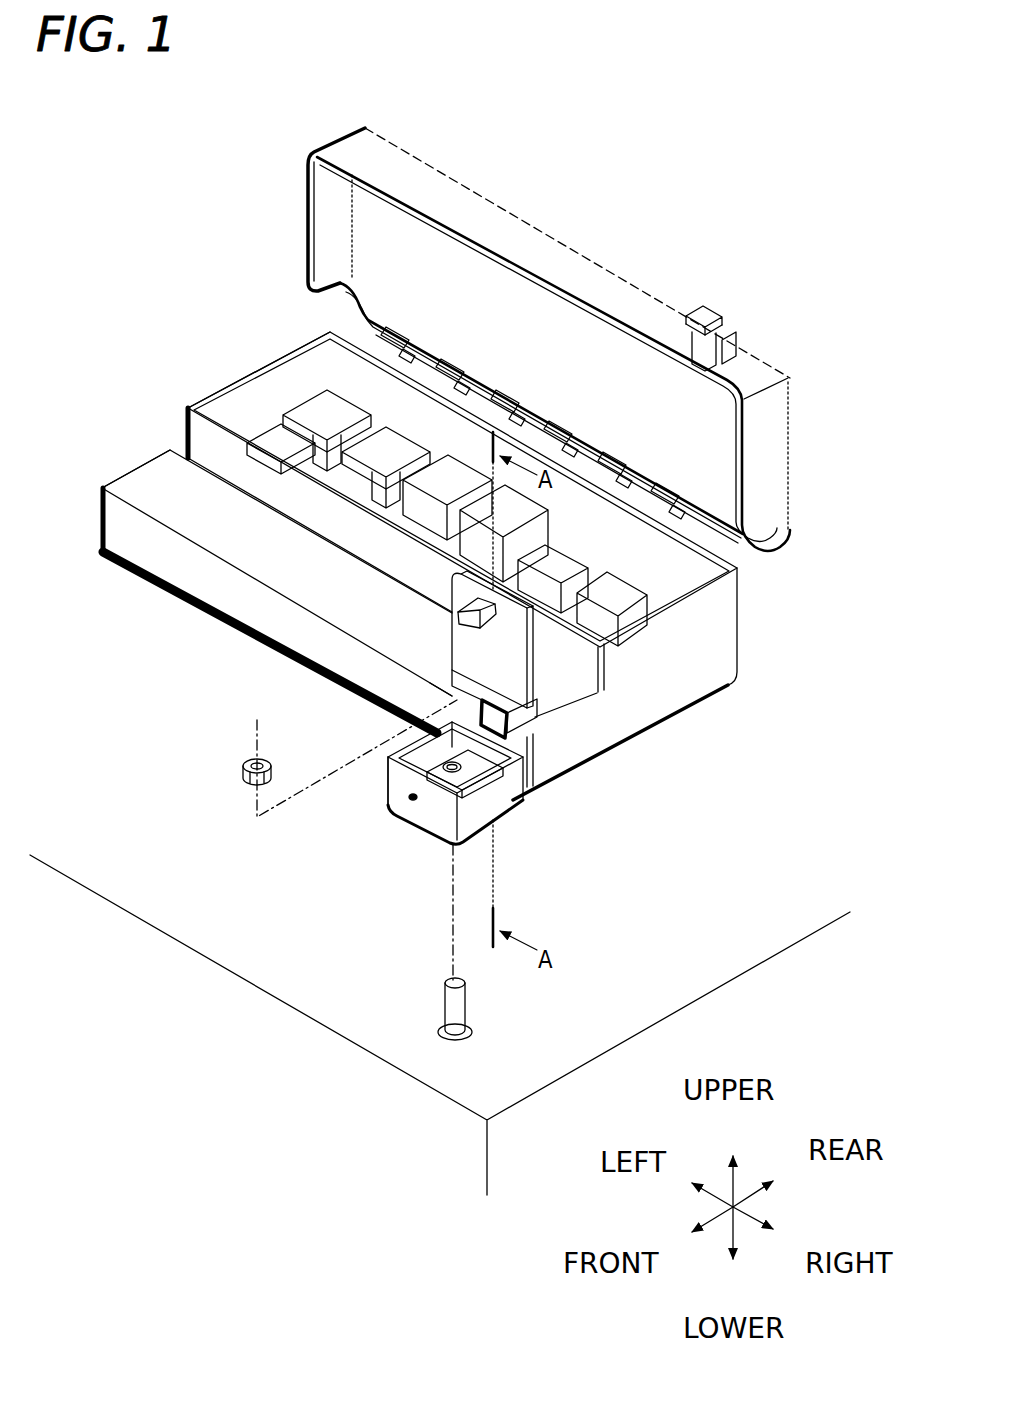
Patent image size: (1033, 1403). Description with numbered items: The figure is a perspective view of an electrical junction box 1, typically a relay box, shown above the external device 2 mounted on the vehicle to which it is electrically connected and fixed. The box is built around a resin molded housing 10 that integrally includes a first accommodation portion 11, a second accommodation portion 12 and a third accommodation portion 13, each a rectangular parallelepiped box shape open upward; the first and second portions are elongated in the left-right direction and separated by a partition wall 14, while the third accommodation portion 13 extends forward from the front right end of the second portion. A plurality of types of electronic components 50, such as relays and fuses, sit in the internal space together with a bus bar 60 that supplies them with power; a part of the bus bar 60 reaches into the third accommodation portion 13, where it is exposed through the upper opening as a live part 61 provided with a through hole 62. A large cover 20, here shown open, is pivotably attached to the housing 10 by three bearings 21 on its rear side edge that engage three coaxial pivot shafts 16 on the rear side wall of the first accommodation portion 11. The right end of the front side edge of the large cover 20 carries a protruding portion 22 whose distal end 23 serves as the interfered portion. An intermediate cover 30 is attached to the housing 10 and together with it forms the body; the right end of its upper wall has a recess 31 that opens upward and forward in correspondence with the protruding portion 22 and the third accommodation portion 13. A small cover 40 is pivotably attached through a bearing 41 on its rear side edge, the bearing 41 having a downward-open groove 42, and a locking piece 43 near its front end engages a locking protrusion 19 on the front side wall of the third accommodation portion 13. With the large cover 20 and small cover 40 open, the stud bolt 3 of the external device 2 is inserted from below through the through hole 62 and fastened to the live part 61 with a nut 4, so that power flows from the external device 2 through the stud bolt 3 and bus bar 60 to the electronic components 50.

The electrical junction box 1 is at (116, 246).
The external device 2 is at (153, 949).
The stud bolt 3 is at (470, 1017).
The nut 4 is at (240, 768).
The housing 10 is at (734, 699).
The first accommodation portion 11 is at (255, 405).
The second accommodation portion 12 is at (160, 480).
The third accommodation portion 13 is at (395, 767).
The partition wall 14 is at (222, 457).
The pivot shafts 16 is at (452, 380).
The locking protrusion 19 is at (413, 801).
The large cover 20 is at (385, 130).
The bearings 21 is at (410, 355).
The protruding portion 22 is at (725, 335).
The distal end 23 is at (702, 312).
The intermediate cover 30 is at (99, 512).
The recess 31 is at (480, 697).
The small cover 40 is at (548, 652).
The bearing 41 is at (522, 712).
The groove 42 is at (462, 716).
The locking piece 43 is at (457, 613).
The electronic components 50 is at (321, 411).
The bus bar 60 is at (495, 780).
The live part 61 is at (500, 795).
The through hole 62 is at (453, 774).